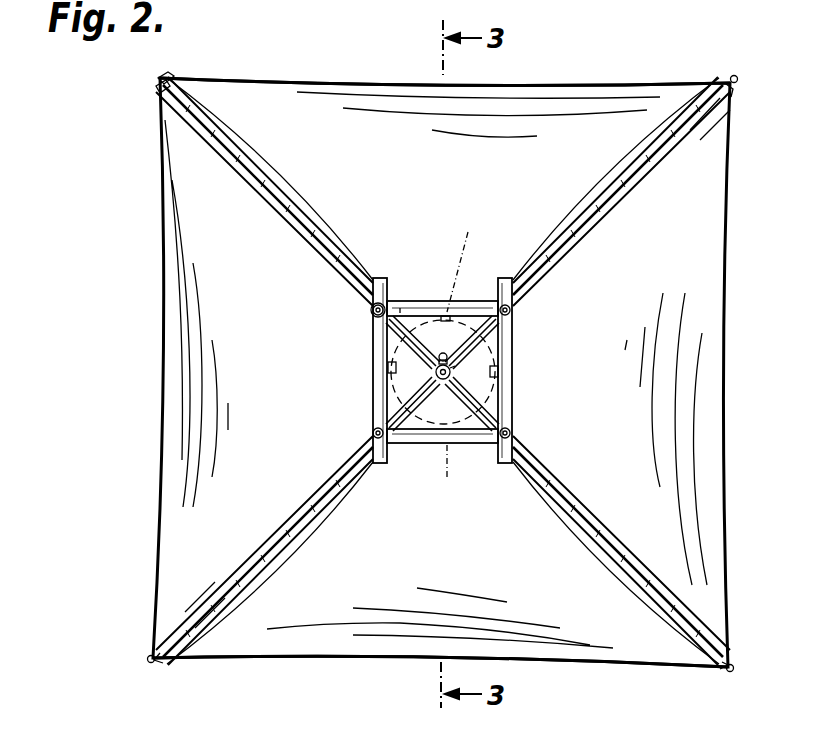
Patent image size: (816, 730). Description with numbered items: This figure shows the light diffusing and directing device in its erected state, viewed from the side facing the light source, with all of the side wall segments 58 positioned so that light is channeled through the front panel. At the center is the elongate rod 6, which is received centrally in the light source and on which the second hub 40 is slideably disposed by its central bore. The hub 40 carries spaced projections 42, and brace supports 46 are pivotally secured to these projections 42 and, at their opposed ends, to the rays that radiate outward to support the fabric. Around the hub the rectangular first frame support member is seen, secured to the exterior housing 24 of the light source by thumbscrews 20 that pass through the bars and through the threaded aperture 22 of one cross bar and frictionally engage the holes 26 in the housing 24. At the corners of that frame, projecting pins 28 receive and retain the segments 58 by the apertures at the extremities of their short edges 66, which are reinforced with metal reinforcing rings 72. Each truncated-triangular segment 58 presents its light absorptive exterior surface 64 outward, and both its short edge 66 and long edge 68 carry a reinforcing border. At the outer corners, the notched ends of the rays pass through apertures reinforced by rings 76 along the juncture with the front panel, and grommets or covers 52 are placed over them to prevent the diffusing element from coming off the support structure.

The elongate rod 6 is at (455, 366).
The thumbscrews 20 is at (440, 316).
The threaded aperture 22 is at (455, 261).
The exterior housing 24 is at (447, 478).
The holes 26 is at (390, 357).
The pins 28 is at (372, 306).
The second hub 40 is at (445, 410).
The projections 42 is at (400, 308).
The brace supports 46 is at (398, 325).
The grommets or covers 52 is at (157, 77).
The conformable segments 58 is at (632, 105).
The exterior surface 64 is at (374, 100).
The short edge 66 is at (380, 300).
The long edge 68 is at (690, 140).
The metal reinforcing rings 72 is at (371, 312).
The reinforcing rings 76 is at (159, 88).